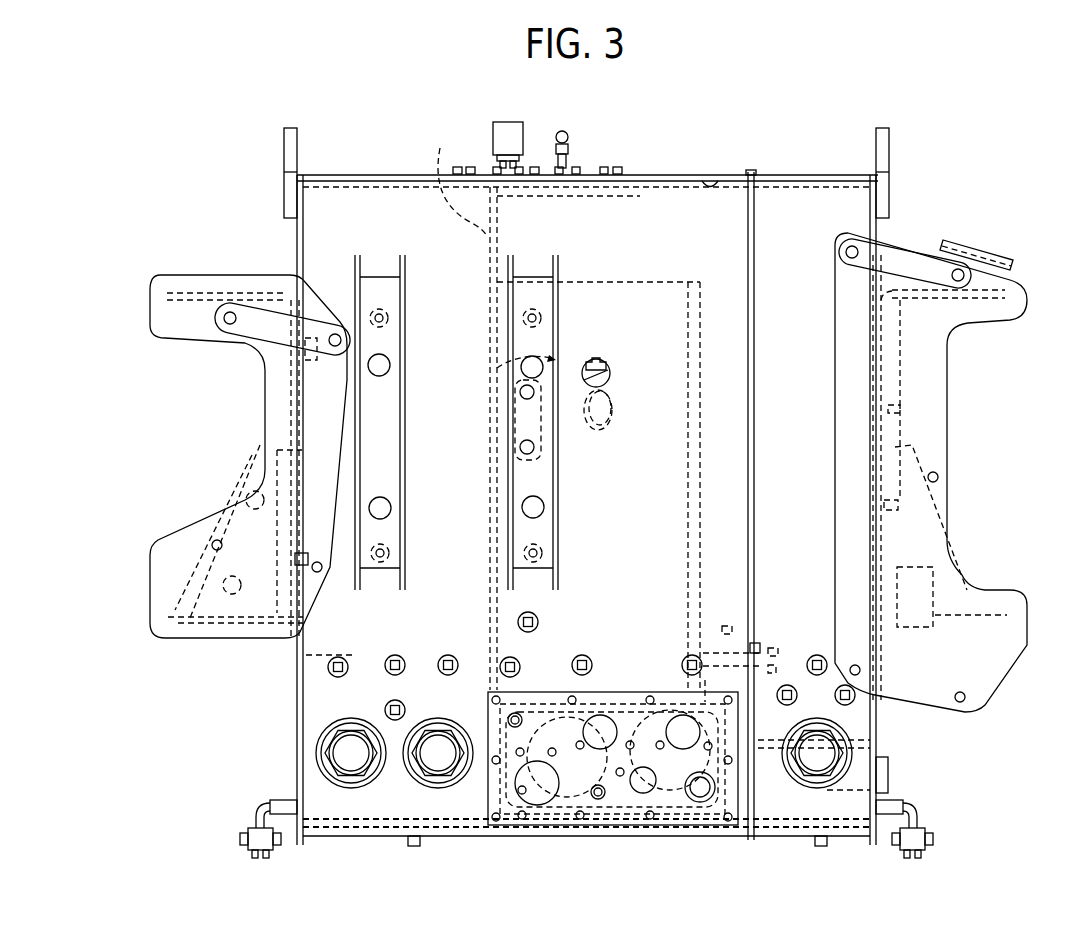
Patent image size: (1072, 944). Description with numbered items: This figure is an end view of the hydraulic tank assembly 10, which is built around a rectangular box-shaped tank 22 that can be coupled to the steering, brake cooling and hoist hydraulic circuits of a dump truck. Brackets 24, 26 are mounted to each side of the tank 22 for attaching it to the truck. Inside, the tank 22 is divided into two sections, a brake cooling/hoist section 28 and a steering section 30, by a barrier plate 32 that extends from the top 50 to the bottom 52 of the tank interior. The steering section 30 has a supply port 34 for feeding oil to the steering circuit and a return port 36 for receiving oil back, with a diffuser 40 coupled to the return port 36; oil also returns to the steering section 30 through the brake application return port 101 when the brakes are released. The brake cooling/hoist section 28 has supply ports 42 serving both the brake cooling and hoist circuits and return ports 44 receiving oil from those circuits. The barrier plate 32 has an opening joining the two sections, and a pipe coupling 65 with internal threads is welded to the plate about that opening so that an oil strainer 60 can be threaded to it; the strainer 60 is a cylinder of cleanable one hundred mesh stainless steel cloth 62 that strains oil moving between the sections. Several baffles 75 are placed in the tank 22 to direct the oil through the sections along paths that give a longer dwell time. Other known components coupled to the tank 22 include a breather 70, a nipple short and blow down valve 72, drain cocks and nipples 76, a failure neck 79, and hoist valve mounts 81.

The hydraulic tank assembly 10 is at (125, 343).
The tank 22 is at (297, 690).
The bracket 24 is at (193, 315).
The bracket 26 is at (1000, 305).
The brake cooling/hoist section 28 is at (441, 230).
The steering section 30 is at (817, 260).
The barrier plate 32 is at (755, 245).
The supply port 34 is at (811, 766).
The return port 36 is at (893, 778).
The diffuser 40 is at (865, 773).
The supply ports 42 is at (566, 770).
The return ports 44 is at (348, 757).
The top 50 is at (710, 178).
The bottom 52 is at (748, 838).
The oil strainer 60 is at (785, 645).
The stainless steel cloth 62 is at (728, 628).
The pipe coupling 65 is at (747, 684).
The breather 70 is at (503, 122).
The nipple short and blow down valve 72 is at (561, 130).
The baffles 75 is at (704, 468).
The drain cocks and nipples 76 is at (251, 812).
The failure neck 79 is at (610, 430).
The hoist valve mounts 81 is at (357, 297).
The brake application return port 101 is at (890, 692).